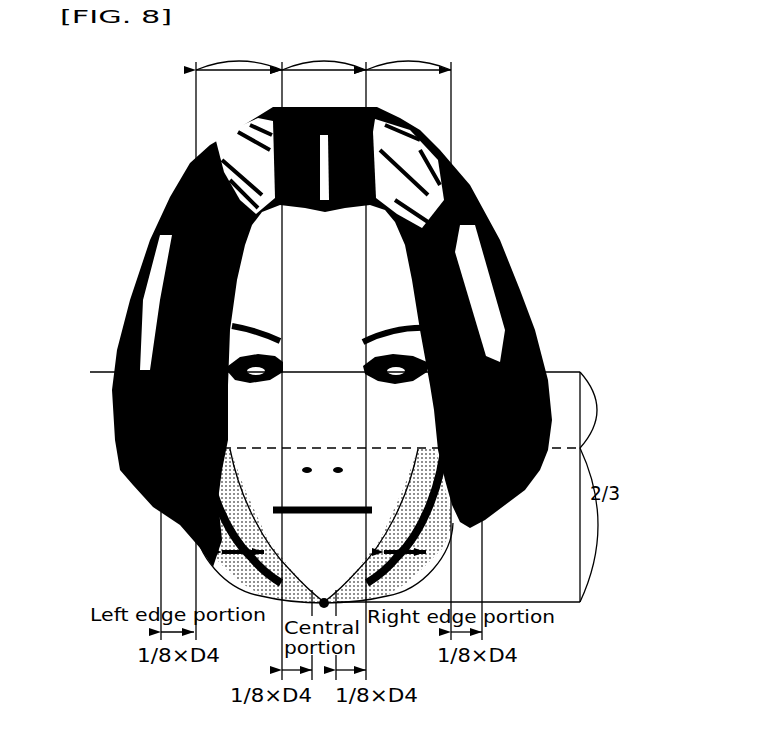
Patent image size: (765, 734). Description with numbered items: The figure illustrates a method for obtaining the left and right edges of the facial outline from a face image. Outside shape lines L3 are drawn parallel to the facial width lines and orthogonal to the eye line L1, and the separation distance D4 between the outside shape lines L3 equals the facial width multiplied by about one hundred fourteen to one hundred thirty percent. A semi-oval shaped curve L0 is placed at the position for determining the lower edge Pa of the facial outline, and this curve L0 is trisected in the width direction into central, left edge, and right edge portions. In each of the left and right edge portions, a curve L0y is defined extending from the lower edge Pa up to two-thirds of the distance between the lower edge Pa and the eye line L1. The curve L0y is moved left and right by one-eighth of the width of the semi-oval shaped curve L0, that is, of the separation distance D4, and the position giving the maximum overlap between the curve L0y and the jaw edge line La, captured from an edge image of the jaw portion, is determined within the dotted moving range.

The semi-oval shaped curve L0 is at (332, 337).
The curve L0y is at (324, 533).
The eye line L1 is at (318, 372).
The outside shape lines L3 is at (326, 336).
The separation distance D4 is at (323, 53).
The lower edge Pa is at (330, 595).
The jaw edge line La is at (427, 531).